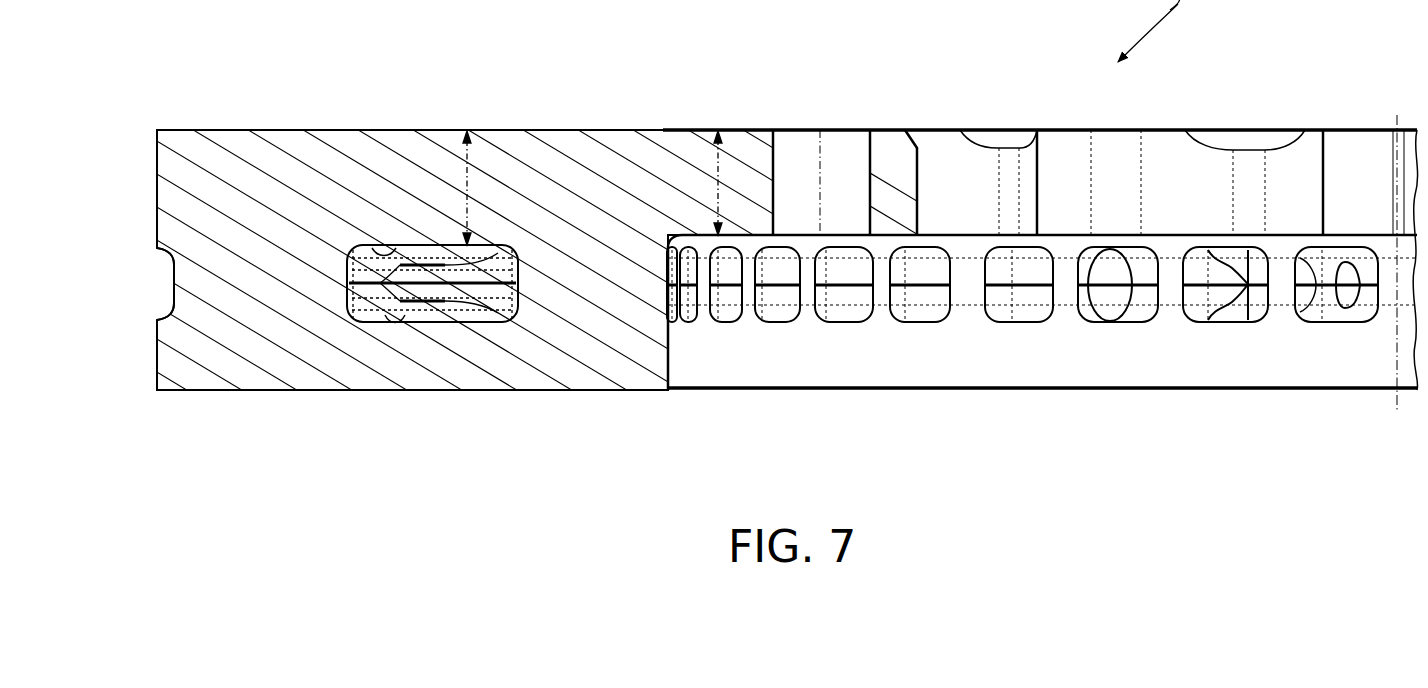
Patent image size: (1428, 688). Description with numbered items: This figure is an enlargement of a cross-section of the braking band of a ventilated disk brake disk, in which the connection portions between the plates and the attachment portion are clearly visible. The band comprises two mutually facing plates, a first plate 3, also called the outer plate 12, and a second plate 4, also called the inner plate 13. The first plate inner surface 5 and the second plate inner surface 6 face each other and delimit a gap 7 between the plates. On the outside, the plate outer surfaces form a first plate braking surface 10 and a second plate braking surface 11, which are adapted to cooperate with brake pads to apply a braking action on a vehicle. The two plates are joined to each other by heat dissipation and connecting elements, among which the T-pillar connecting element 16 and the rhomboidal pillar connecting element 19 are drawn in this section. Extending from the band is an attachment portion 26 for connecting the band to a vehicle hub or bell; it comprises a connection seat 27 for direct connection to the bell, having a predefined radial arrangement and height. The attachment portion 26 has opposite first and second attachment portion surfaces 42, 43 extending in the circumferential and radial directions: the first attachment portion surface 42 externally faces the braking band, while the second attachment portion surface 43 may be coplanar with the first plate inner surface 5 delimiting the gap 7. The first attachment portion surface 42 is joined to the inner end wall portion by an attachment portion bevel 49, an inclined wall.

The first plate 3 is at (245, 157).
The outer plate 12 is at (352, 158).
The first plate inner surface 5 is at (400, 252).
The first plate braking surface 10 is at (438, 129).
The first attachment portion surface 42 is at (725, 128).
The connection seat 27 is at (790, 168).
The attachment portion bevel 49 is at (918, 130).
The attachment portion 26 is at (898, 193).
The gap 7 is at (160, 278).
The heat dissipation and T-pillar connecting element 16 is at (283, 325).
The second plate 4 is at (318, 378).
The inner plate 13 is at (362, 358).
The second plate inner surface 6 is at (395, 315).
The second plate braking surface 11 is at (487, 393).
The heat dissipation and rhomboidal pillar connecting element 19 is at (593, 300).
The second attachment portion surface 43 is at (745, 238).